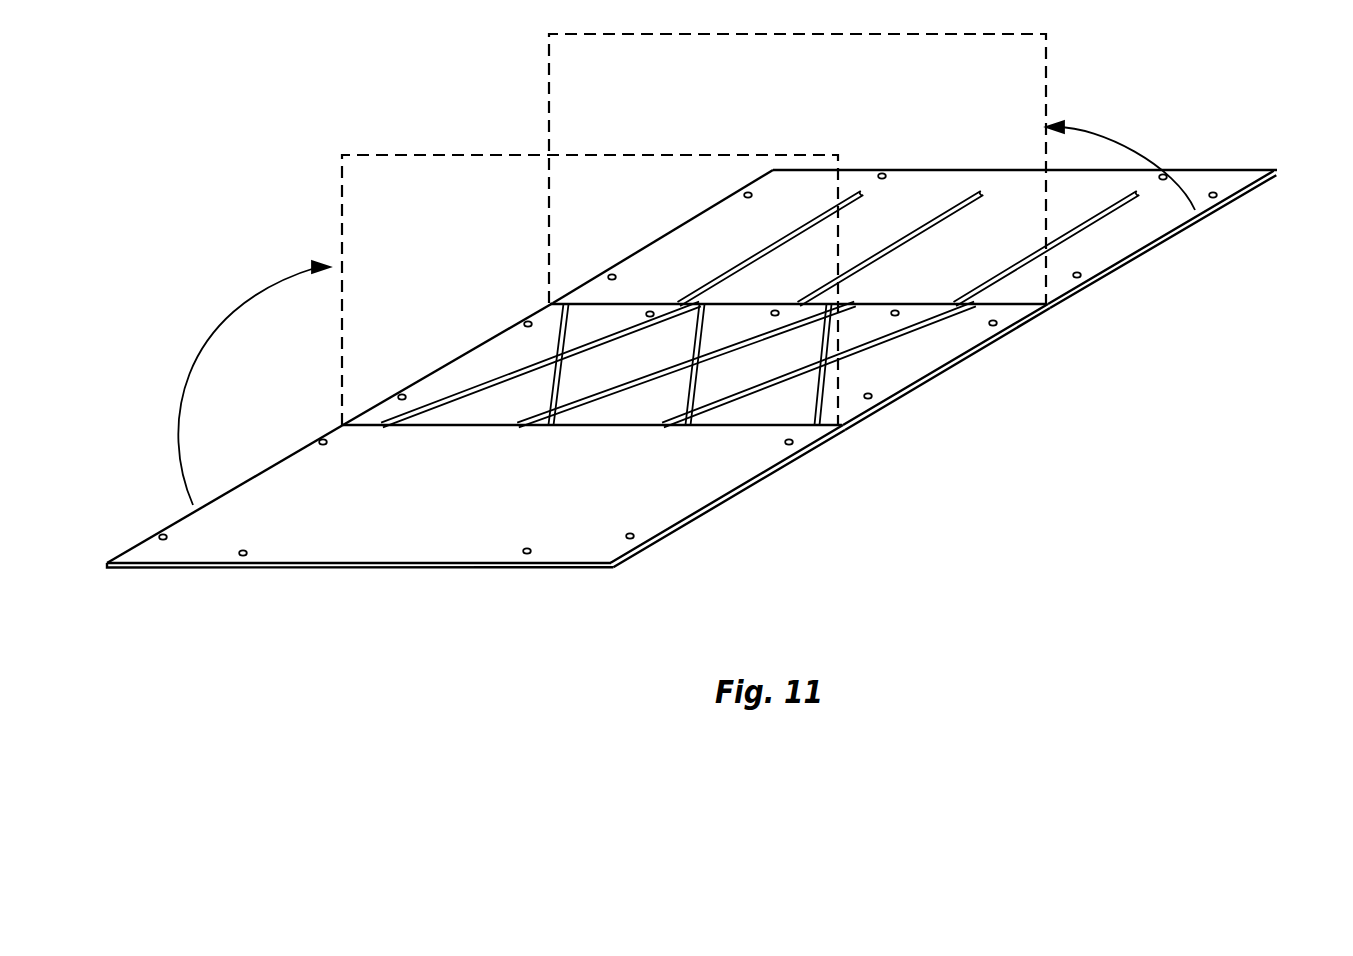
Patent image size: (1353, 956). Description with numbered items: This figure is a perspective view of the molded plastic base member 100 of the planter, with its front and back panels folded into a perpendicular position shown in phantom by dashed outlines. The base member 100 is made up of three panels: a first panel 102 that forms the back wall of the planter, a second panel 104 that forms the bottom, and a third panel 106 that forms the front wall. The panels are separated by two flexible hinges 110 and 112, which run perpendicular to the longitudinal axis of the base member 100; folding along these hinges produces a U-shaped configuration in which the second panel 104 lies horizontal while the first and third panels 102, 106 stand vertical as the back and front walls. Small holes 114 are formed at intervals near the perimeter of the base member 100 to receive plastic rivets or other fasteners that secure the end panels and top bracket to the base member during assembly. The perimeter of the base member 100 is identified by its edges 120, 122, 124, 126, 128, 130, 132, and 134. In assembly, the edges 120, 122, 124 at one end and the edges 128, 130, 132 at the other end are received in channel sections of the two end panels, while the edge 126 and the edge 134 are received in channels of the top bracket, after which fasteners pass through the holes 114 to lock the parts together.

The base member 100 is at (1082, 455).
The first panel 102 is at (942, 208).
The second panel 104 is at (708, 427).
The third panel 106 is at (476, 530).
The flexible hinge 110 is at (1033, 300).
The flexible hinge 112 is at (760, 427).
The small holes 114 is at (887, 170).
The edge 120 is at (1263, 188).
The edge 122 is at (982, 352).
The edge 124 is at (703, 513).
The edge 126 is at (357, 569).
The edge 128 is at (262, 468).
The edge 130 is at (450, 362).
The edge 132 is at (665, 235).
The edge 134 is at (858, 168).